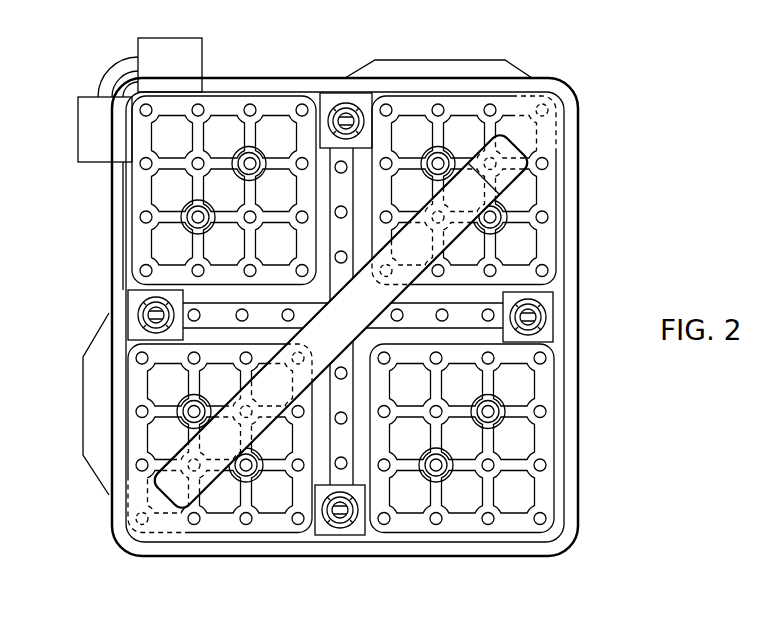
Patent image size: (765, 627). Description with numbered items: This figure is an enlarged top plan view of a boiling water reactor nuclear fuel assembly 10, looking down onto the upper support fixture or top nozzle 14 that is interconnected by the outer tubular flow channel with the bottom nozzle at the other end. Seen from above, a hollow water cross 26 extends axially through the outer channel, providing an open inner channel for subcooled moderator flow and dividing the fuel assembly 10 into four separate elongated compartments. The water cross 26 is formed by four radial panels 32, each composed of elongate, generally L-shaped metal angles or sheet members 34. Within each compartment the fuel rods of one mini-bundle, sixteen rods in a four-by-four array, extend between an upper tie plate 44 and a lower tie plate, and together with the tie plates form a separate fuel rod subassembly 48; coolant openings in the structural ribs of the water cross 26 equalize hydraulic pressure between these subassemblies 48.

The fuel assembly 10 is at (596, 71).
The top nozzle 14 is at (579, 464).
The water cross 26 is at (215, 352).
The radial panels 32 is at (352, 77).
The sheet members 34 is at (330, 186).
The upper tie plate 44 is at (278, 96).
The fuel rod subassembly 48 is at (131, 189).